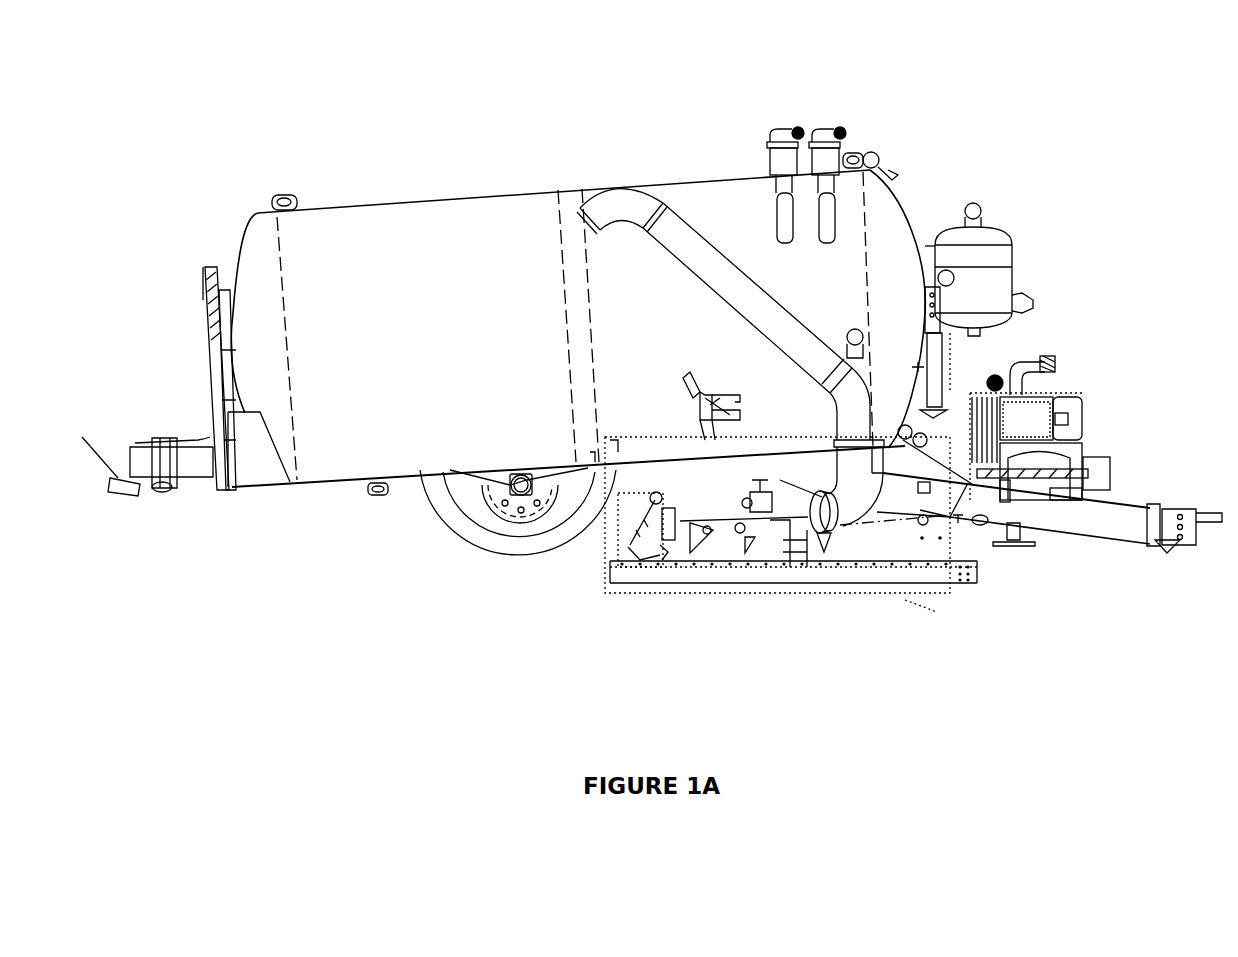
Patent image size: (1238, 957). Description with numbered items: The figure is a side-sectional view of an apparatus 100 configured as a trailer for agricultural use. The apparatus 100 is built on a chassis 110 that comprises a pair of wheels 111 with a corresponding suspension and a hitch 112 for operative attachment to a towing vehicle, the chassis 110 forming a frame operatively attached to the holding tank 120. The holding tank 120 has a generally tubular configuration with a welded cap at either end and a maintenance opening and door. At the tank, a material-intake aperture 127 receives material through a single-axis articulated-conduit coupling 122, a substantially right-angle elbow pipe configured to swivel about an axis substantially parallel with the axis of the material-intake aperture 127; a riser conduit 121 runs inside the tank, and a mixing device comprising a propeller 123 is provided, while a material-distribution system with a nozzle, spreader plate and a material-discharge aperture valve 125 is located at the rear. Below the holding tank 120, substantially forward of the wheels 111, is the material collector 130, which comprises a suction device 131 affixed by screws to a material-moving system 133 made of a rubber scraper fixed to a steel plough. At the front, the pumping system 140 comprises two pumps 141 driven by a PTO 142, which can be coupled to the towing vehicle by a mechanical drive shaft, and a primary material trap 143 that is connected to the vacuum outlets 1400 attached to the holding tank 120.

The apparatus 100 is at (121, 103).
The chassis 110 is at (382, 547).
The wheels 111 is at (460, 563).
The hitch 112 is at (1148, 508).
The holding tank 120 is at (521, 189).
The riser conduit 121 is at (707, 233).
The single-axis articulated-conduit coupling 122 is at (847, 517).
The mixing device propeller 123 is at (683, 378).
The material-discharge aperture valve 125 is at (159, 430).
The material-intake aperture 127 is at (857, 443).
The material collector 130 is at (770, 608).
The suction device 131 is at (647, 574).
The material-moving system 133 is at (818, 587).
The pumping system 140 is at (1109, 203).
The pumps 141 is at (1087, 370).
The PTO 142 is at (1105, 460).
The primary material trap 143 is at (1001, 214).
The vacuum outlets 1400 is at (819, 111).